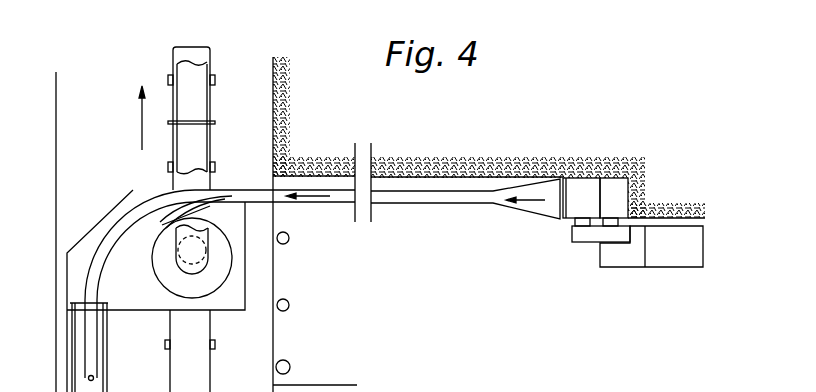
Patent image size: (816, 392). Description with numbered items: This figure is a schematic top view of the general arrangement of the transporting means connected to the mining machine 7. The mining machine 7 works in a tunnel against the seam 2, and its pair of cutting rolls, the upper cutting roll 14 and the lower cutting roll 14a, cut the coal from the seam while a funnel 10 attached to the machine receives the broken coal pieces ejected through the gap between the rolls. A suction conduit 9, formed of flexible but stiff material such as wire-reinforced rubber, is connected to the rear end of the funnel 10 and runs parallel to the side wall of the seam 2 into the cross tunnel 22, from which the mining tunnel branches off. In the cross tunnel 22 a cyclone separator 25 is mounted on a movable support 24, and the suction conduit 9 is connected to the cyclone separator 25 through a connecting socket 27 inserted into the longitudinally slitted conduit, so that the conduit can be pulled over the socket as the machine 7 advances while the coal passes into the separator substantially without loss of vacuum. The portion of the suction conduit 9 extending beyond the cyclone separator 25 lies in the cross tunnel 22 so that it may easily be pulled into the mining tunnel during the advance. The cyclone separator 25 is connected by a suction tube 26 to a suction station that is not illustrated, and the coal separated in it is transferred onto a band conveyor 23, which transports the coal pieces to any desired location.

The seam 2 is at (322, 158).
The mining machine 7 is at (670, 260).
The suction conduit 9 is at (245, 190).
The funnel 10 is at (540, 208).
The upper cutting roll 14 is at (578, 186).
The lower cutting roll 14a is at (615, 190).
The cross tunnel 22 is at (78, 232).
The band conveyor 23 is at (200, 368).
The movable support 24 is at (240, 242).
The cyclone separator 25 is at (218, 270).
The suction tube 26 is at (200, 147).
The connecting socket 27 is at (184, 212).